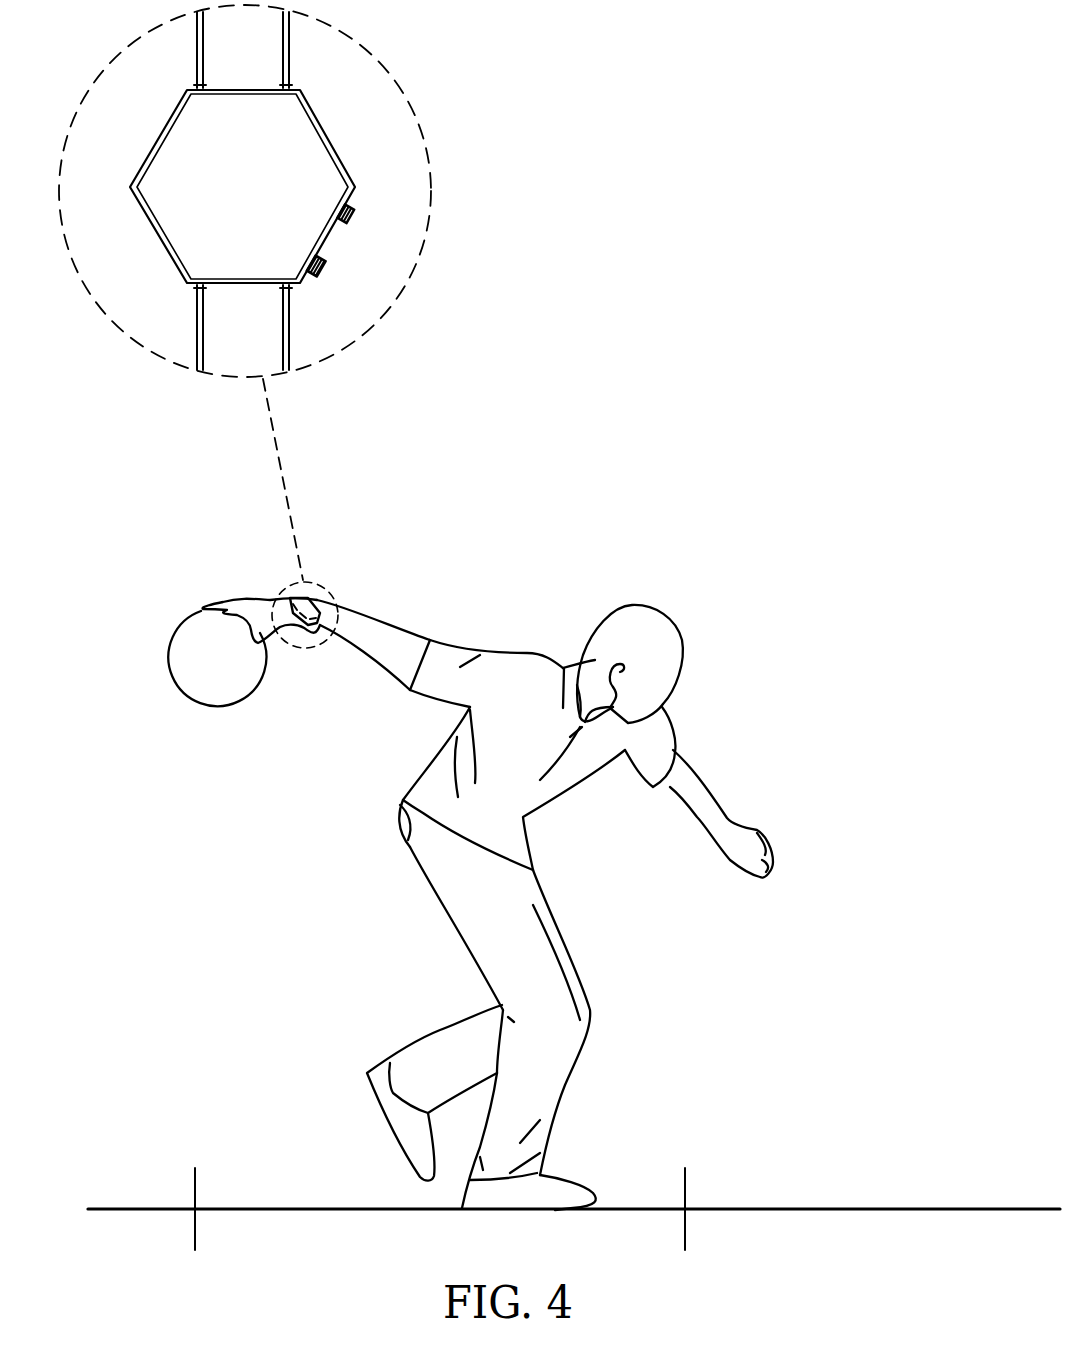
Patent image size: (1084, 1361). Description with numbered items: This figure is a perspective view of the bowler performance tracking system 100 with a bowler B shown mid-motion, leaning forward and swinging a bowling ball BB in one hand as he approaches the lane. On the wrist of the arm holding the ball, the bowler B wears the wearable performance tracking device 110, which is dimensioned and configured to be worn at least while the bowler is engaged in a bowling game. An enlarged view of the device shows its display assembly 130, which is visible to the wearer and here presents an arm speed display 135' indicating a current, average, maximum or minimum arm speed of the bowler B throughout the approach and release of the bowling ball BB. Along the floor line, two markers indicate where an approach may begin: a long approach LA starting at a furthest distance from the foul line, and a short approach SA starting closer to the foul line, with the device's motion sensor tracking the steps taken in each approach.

The bowler performance tracking system 100 is at (605, 487).
The wearable performance tracking device 110 is at (320, 592).
The display assembly 130 is at (235, 290).
The arm speed display 135' is at (279, 161).
The bowler B is at (673, 733).
The bowling ball BB is at (226, 706).
The long approach LA is at (193, 1223).
The short approach SA is at (684, 1223).